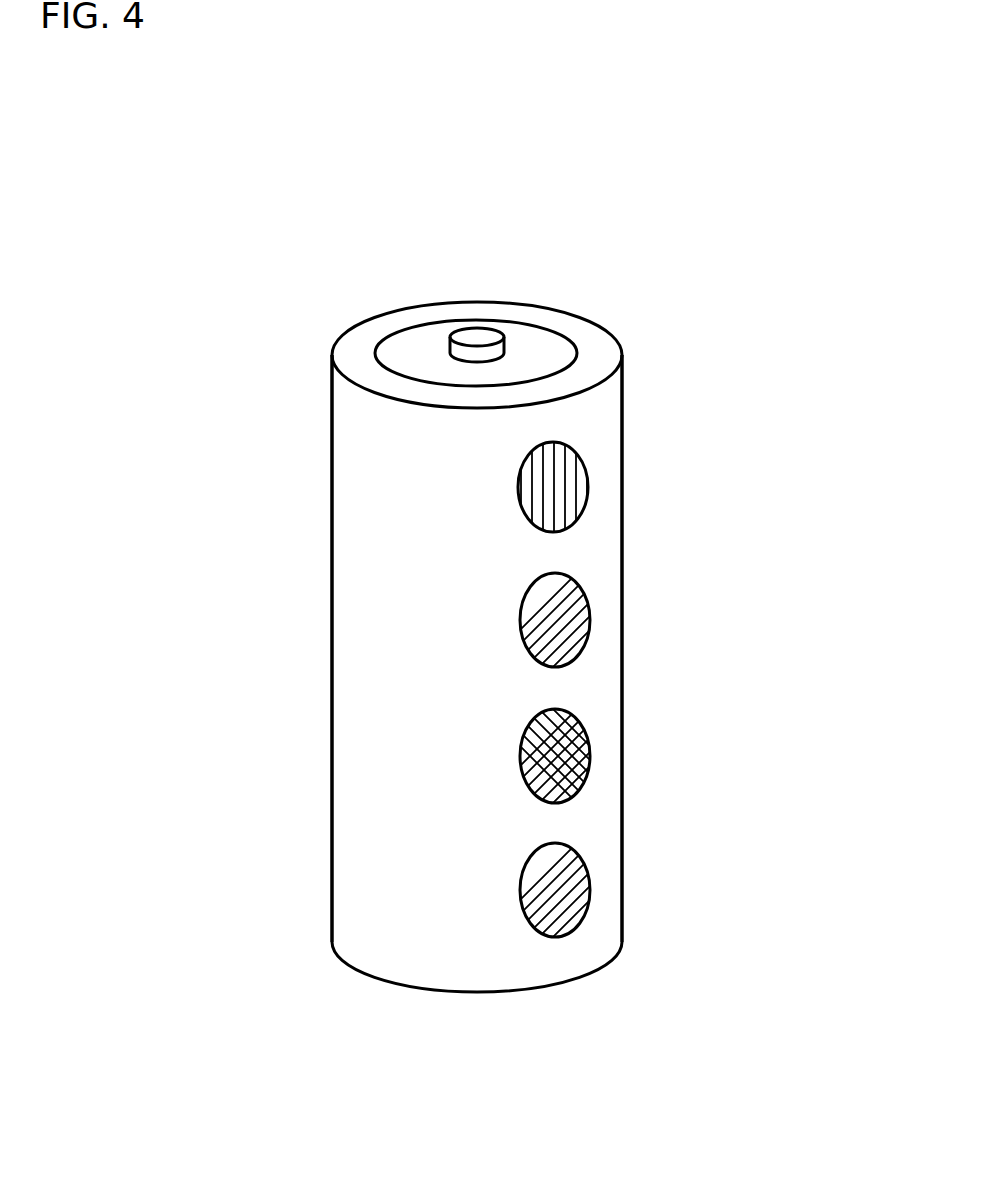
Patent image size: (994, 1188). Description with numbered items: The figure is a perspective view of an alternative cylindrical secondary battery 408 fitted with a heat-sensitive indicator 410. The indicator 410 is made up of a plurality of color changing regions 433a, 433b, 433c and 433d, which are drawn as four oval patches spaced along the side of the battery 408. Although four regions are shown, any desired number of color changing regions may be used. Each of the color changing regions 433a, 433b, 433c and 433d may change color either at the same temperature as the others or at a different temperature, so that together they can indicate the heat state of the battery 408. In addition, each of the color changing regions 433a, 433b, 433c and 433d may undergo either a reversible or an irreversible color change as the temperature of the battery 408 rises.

The secondary battery 408 is at (673, 288).
The heat-sensitive indicator 410 is at (360, 440).
The color changing region 433a is at (572, 484).
The color changing region 433b is at (575, 615).
The color changing region 433c is at (575, 750).
The color changing region 433d is at (575, 887).